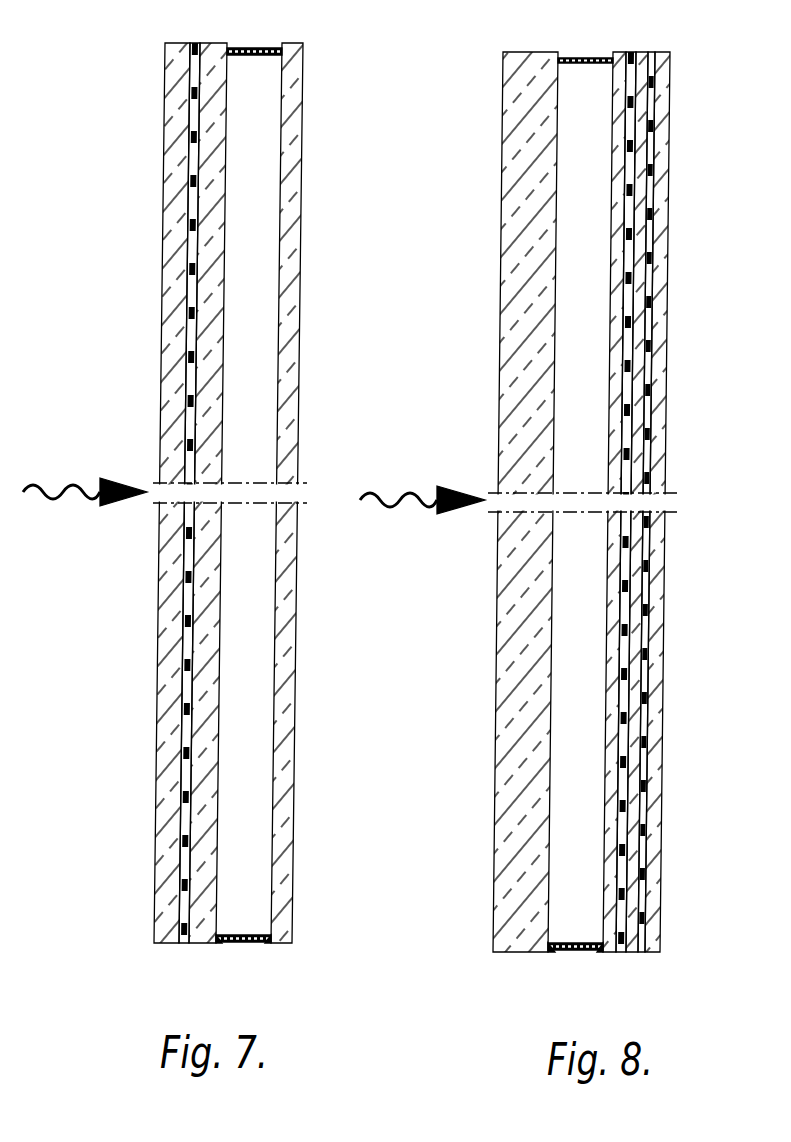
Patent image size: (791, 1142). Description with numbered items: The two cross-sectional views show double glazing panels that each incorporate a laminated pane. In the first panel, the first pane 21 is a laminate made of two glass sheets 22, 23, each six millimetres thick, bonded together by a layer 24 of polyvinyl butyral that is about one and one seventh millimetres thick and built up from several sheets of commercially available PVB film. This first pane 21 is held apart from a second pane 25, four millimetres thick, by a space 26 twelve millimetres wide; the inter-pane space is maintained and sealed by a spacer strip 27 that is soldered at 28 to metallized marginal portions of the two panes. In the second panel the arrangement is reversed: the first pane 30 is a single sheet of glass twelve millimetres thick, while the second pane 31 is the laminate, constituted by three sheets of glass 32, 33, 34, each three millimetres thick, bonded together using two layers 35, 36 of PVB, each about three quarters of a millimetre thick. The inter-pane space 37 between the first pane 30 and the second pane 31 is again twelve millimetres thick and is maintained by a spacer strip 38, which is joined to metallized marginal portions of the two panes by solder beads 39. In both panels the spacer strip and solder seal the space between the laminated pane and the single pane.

In FIG. 7, the first pane 21 is at (149, 474).
In FIG. 7, the glass sheet 22 is at (175, 197).
In FIG. 7, the glass sheet 23 is at (208, 383).
In FIG. 7, the layer of polyvinyl butyral 24 is at (190, 623).
In FIG. 7, the second pane 25 is at (300, 200).
In FIG. 7, the space 26 is at (263, 450).
In FIG. 7, the spacer strip 27 is at (247, 933).
In FIG. 7, the solder 28 is at (220, 941).
In FIG. 8, the first pane 30 is at (528, 197).
In FIG. 8, the second pane 31 is at (676, 483).
In FIG. 8, the sheet of glass 32 is at (620, 107).
In FIG. 8, the sheet of glass 33 is at (640, 262).
In FIG. 8, the sheet of glass 34 is at (657, 403).
In FIG. 8, the layer of PVB 35 is at (625, 543).
In FIG. 8, the layer of PVB 36 is at (645, 683).
In FIG. 8, the inter-pane space 37 is at (600, 457).
In FIG. 8, the spacer strip 38 is at (577, 940).
In FIG. 8, the solder beads 39 is at (603, 952).